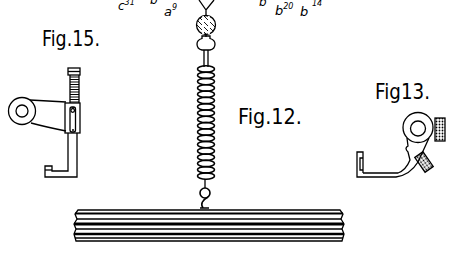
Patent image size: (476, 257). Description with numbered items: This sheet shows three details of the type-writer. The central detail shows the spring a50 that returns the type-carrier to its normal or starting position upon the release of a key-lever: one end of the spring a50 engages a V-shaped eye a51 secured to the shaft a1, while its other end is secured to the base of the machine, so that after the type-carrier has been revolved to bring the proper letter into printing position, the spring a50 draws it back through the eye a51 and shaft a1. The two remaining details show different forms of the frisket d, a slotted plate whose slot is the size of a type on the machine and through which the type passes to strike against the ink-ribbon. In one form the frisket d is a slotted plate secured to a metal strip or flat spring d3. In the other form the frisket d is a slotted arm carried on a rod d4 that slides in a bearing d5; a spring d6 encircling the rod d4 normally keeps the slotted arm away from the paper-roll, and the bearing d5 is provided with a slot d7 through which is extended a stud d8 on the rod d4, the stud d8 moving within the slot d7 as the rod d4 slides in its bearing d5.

In FIG. 15, the frisket d is at (52, 178).
In FIG. 13, the frisket d is at (357, 165).
In FIG. 13, the flat spring d3 is at (392, 176).
In FIG. 15, the rod d4 is at (77, 150).
In FIG. 15, the bearing d5 is at (80, 118).
In FIG. 15, the spring d6 is at (78, 89).
In FIG. 15, the slot d7 is at (65, 133).
In FIG. 15, the stud d8 is at (80, 110).
In FIG. 12, the shaft a1 is at (215, 25).
In FIG. 12, the V-shaped eye a51 is at (215, 45).
In FIG. 12, the spring a50 is at (198, 124).